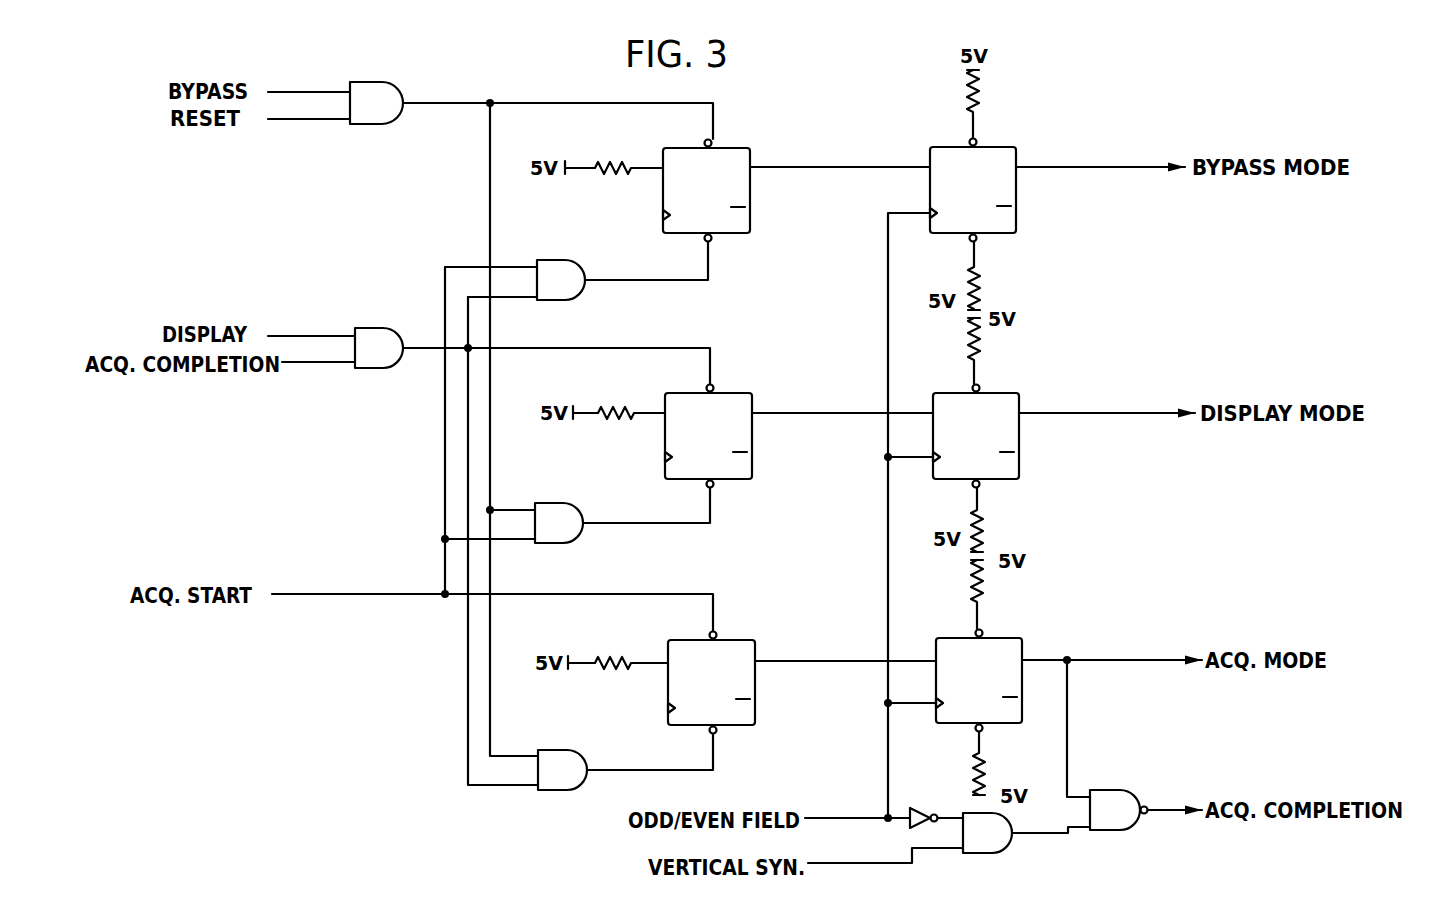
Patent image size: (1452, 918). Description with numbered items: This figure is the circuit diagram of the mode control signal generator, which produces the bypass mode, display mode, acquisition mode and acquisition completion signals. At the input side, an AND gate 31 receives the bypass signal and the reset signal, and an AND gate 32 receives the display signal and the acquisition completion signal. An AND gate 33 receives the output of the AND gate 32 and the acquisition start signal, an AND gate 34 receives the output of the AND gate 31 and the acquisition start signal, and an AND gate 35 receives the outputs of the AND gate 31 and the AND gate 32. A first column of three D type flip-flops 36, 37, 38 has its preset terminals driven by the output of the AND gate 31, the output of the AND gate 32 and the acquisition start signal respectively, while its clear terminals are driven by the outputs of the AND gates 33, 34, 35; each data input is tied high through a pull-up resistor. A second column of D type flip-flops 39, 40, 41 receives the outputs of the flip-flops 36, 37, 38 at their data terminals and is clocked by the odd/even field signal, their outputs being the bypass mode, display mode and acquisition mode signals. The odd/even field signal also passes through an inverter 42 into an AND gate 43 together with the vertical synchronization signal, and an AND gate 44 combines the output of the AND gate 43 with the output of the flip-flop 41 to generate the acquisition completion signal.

The AND gate 31 is at (376, 103).
The AND gate 32 is at (379, 348).
The AND gate 33 is at (561, 280).
The AND gate 34 is at (559, 523).
The AND gate 35 is at (562, 770).
The D type flip-flop 36 is at (732, 148).
The D type flip-flop 37 is at (737, 393).
The D type flip-flop 38 is at (740, 640).
The D type flip-flop 39 is at (998, 147).
The D type flip-flop 40 is at (1003, 393).
The D type flip-flop 41 is at (1005, 638).
The inverter 42 is at (915, 808).
The AND gate 43 is at (987, 833).
The AND gate 44 is at (1119, 810).